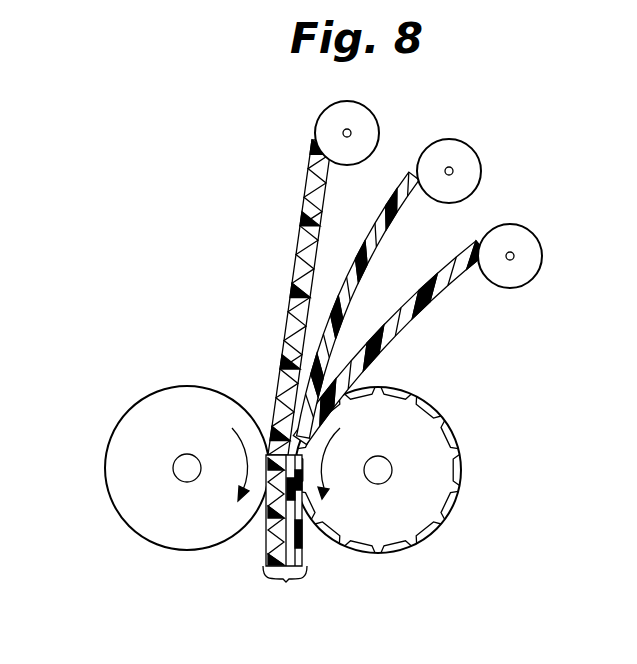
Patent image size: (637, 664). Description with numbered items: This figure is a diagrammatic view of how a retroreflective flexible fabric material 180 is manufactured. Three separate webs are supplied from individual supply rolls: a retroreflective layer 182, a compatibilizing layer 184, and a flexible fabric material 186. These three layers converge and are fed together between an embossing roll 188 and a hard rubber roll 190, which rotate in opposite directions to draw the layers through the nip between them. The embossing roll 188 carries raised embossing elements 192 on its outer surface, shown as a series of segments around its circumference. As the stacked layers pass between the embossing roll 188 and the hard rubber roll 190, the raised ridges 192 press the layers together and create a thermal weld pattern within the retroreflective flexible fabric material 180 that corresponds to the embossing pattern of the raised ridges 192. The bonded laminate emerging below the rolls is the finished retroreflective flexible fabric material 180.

The retroreflective flexible fabric material 180 is at (286, 582).
The retroreflective layer 182 is at (299, 237).
The compatibilizing layer 184 is at (394, 212).
The flexible fabric material 186 is at (417, 312).
The embossing roll 188 is at (402, 552).
The hard rubber roll 190 is at (140, 399).
The raised embossing elements 192 is at (435, 410).